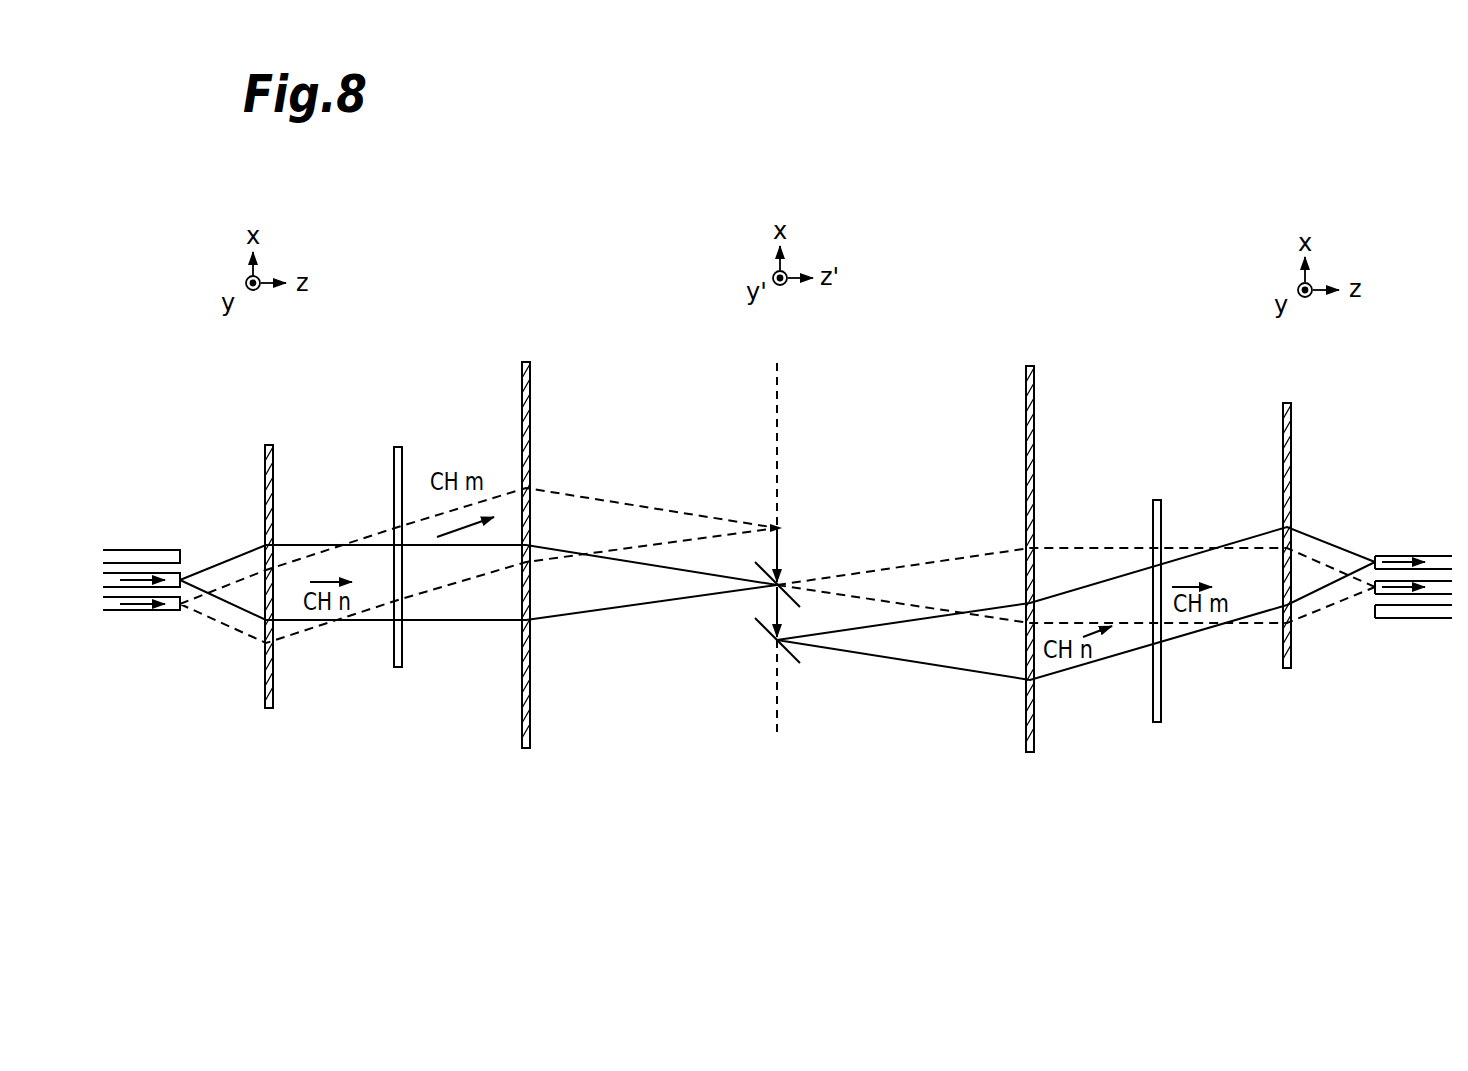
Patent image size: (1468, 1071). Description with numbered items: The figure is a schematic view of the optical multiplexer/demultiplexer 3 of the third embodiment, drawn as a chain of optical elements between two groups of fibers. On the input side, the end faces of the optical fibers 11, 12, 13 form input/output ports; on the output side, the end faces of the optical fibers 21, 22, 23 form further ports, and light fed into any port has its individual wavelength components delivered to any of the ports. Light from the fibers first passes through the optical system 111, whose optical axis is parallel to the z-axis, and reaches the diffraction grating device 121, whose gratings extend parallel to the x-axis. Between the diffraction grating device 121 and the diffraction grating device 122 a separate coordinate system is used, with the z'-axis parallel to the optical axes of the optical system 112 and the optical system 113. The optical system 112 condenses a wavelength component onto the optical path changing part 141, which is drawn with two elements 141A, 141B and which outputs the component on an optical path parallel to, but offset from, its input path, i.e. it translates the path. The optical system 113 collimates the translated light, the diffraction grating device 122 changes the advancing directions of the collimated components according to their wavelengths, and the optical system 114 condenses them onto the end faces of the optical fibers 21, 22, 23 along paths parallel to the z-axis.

The optical multiplexer/demultiplexer 3 is at (973, 193).
The optical fiber 11 is at (118, 550).
The optical fiber 12 is at (157, 573).
The optical fiber 13 is at (105, 611).
The optical fiber 21 is at (1408, 556).
The optical fiber 22 is at (1436, 581).
The optical fiber 23 is at (1401, 619).
The optical system 111 is at (267, 445).
The optical system 112 is at (525, 362).
The optical system 113 is at (1030, 366).
The optical system 114 is at (1286, 403).
The diffraction grating device 121 is at (398, 667).
The diffraction grating device 122 is at (1157, 722).
The optical path changing part 141 is at (643, 610).
The mirror 141A is at (767, 572).
The mirror 141B is at (766, 630).